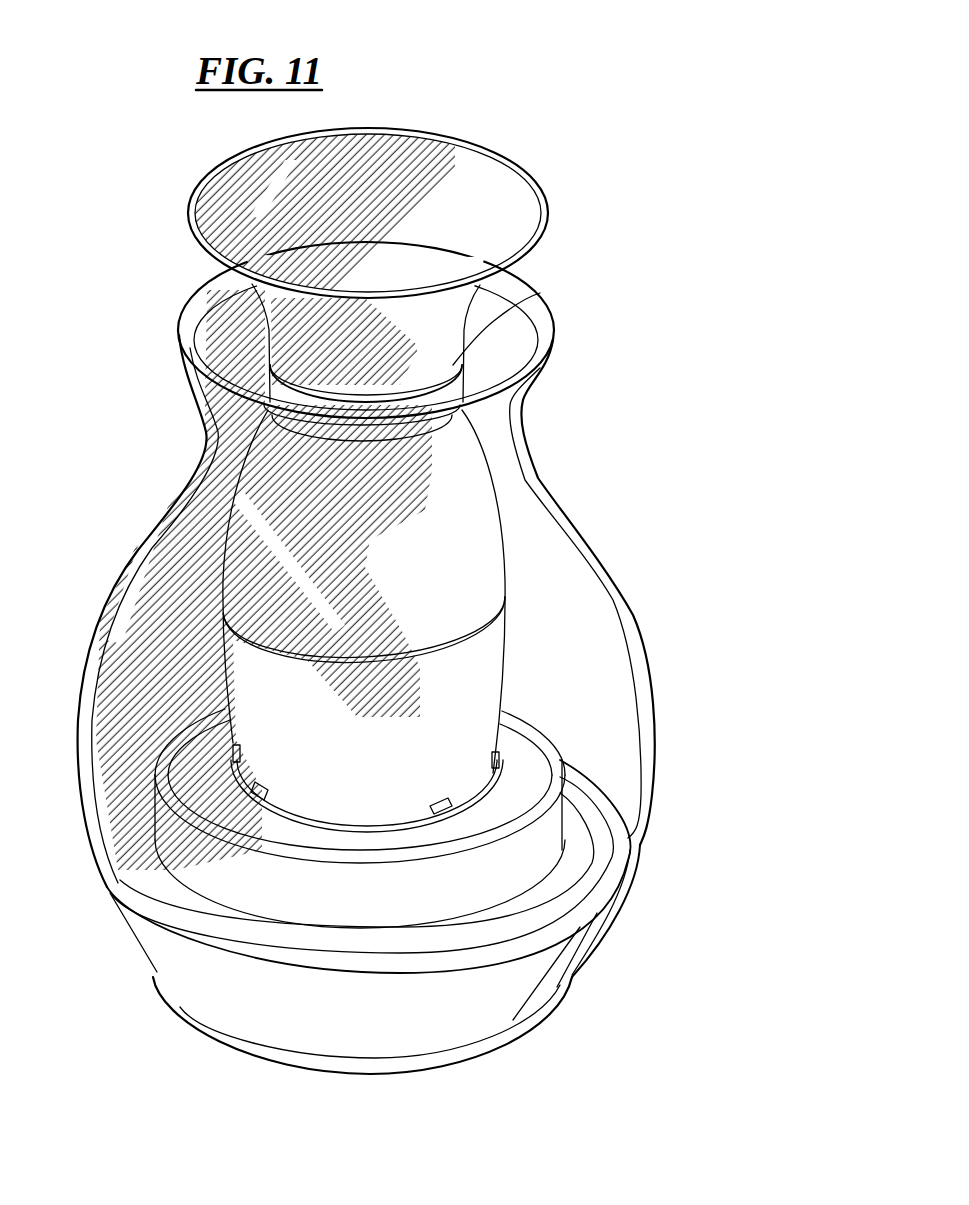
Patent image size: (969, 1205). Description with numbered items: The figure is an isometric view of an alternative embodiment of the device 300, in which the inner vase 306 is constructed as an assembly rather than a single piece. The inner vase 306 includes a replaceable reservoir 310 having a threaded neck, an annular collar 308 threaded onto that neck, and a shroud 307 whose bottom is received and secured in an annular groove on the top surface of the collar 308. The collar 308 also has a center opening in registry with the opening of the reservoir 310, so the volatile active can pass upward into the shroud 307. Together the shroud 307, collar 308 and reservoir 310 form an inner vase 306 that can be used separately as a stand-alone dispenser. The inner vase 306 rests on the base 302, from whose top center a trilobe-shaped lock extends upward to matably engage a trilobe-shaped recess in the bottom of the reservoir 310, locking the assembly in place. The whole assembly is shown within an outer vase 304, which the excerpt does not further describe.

The dispensing apparatus 300 is at (643, 368).
The base 302 is at (235, 737).
The outer container 304 is at (643, 683).
The inner vase 306 is at (383, 97).
The shroud 307 is at (478, 207).
The annular collar 308 is at (531, 299).
The reservoir 310 is at (503, 537).